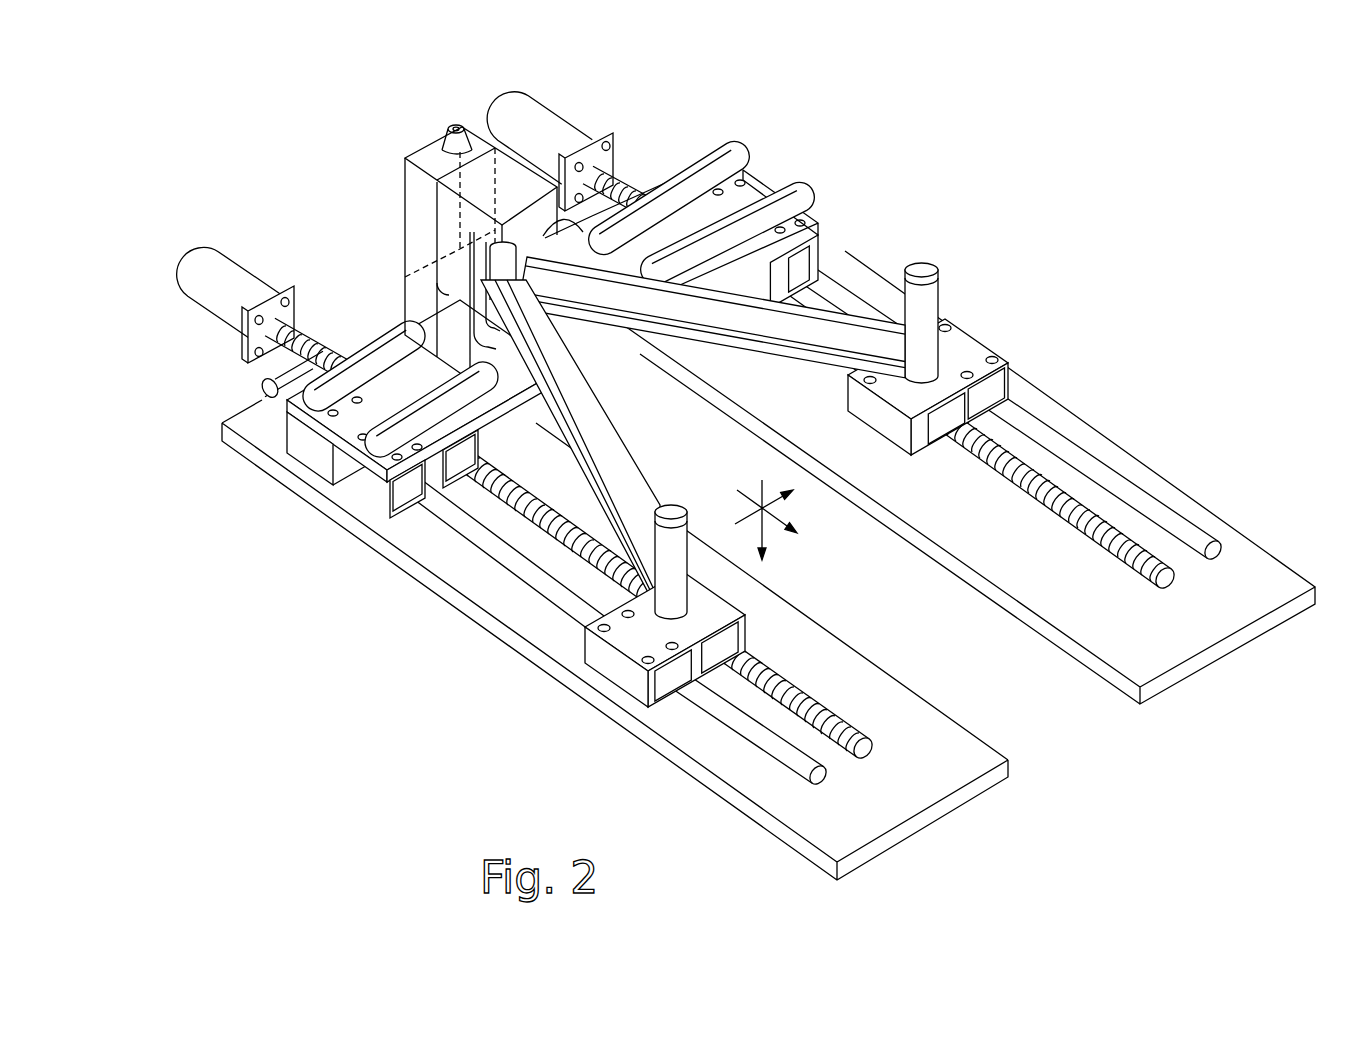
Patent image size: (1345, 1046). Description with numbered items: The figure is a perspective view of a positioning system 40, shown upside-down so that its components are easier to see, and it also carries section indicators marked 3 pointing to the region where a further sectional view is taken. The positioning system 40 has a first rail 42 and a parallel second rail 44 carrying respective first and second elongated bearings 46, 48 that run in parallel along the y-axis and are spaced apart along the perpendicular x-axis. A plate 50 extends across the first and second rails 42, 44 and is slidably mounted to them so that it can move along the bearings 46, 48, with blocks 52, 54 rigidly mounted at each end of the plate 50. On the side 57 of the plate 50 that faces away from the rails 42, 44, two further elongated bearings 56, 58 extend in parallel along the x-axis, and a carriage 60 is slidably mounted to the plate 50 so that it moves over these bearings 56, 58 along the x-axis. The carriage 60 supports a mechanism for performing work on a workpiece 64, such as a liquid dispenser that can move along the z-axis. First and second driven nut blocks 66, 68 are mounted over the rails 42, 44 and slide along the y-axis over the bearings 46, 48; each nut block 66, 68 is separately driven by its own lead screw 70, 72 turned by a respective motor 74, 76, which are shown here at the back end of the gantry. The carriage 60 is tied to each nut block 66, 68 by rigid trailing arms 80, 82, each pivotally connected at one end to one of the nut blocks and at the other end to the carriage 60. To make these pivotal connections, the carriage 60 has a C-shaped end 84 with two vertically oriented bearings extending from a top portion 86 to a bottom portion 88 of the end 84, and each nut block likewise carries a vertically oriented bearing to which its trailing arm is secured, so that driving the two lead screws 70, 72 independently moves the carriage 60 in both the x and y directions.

The positioning system 40 is at (848, 112).
The first rail 42 is at (647, 750).
The second rail 44 is at (1053, 397).
The first elongated bearing 46 is at (530, 590).
The second elongated bearing 48 is at (1127, 483).
The plate 50 is at (752, 166).
The block 52 is at (353, 492).
The block 54 is at (826, 248).
The elongated bearing 56 is at (742, 142).
The side of plate 57 is at (322, 432).
The elongated bearing 58 is at (800, 198).
The carriage 60 is at (502, 172).
The workpiece mechanism 64 is at (403, 154).
The first driven nut block 66 is at (707, 583).
The second driven nut block 68 is at (878, 422).
The lead screw 70 is at (793, 683).
The lead screw 72 is at (1030, 490).
The motor 74 is at (193, 252).
The motor 76 is at (567, 109).
The trailing arm 80 is at (647, 485).
The trailing arm 82 is at (733, 335).
The C-shaped end 84 is at (455, 298).
The top portion 86 is at (592, 217).
The bottom portion 88 is at (462, 343).
The section line for FIG. 3 is at (568, 458).